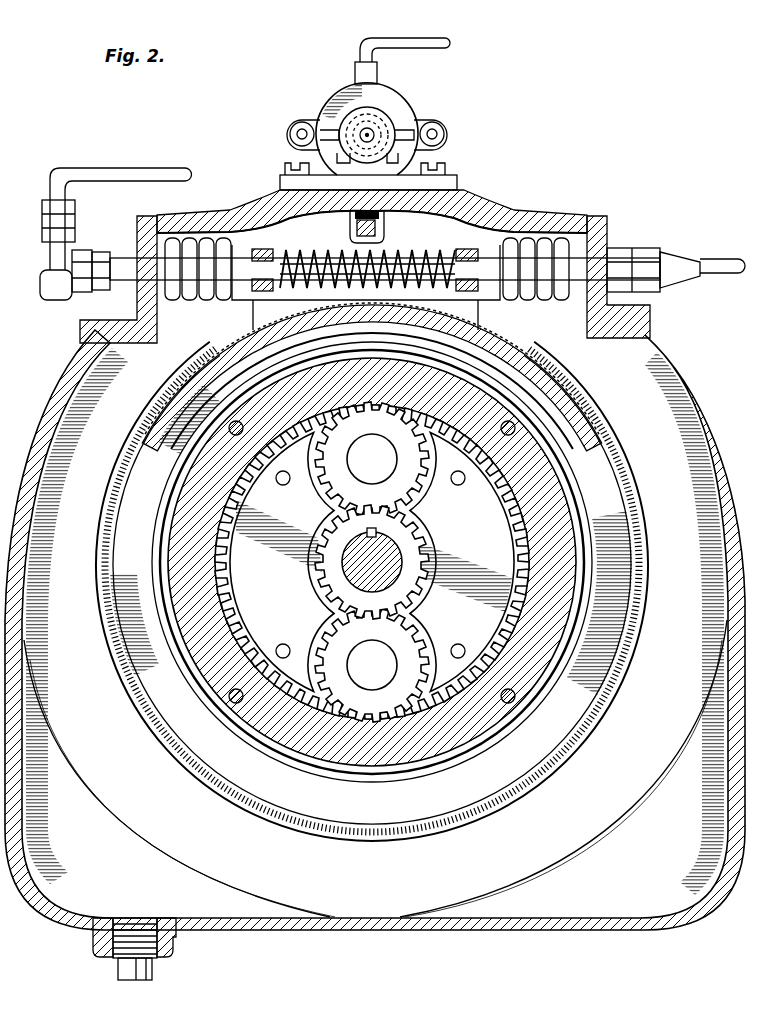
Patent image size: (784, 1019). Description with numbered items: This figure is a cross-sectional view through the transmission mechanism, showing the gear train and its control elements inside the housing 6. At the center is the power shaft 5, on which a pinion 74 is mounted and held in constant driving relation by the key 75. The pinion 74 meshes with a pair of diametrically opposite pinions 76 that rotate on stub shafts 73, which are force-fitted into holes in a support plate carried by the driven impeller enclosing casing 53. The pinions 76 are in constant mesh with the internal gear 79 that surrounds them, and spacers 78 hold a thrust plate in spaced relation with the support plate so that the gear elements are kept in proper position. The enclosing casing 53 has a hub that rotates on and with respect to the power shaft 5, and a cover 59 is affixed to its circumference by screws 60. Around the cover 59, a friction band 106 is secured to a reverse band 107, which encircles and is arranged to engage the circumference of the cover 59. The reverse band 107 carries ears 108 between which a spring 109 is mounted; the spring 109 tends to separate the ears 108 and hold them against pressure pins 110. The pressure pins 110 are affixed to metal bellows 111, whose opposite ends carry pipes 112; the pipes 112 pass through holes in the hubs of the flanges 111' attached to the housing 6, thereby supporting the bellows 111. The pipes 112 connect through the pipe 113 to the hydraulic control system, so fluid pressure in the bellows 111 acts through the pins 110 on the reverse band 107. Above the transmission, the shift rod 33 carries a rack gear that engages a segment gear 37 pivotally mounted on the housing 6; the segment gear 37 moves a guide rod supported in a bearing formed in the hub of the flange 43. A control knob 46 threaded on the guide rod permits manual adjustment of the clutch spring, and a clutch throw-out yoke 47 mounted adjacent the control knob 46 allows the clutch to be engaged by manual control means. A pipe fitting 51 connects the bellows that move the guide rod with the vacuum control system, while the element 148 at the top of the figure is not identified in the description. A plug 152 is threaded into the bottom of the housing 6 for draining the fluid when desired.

The power shaft 5 is at (350, 580).
The housing 6 is at (702, 380).
The shift rod 33 is at (378, 243).
The segment gear 37 is at (386, 226).
The flange 43 is at (398, 102).
The control knob 46 is at (339, 128).
The clutch throw-out yoke 47 is at (345, 95).
The pipe fitting 51 is at (355, 70).
The driven impeller enclosing casing 53 is at (205, 345).
The cover 59 is at (330, 305).
The screws 60 is at (372, 304).
The stub shafts 73 is at (372, 562).
The pinion 74 is at (416, 530).
The key 75 is at (334, 520).
The pinions 76 is at (426, 480).
The spacers 78 is at (374, 556).
The internal gear 79 is at (208, 542).
The friction band 106 is at (160, 380).
The reverse band 107 is at (140, 408).
The ears 108 is at (272, 254).
The spring 109 is at (316, 252).
The pressure pins 110 is at (240, 258).
The metal bellows 111 is at (369, 241).
The flanges 111' is at (381, 279).
The pipes 112 is at (125, 262).
The pipe 113 is at (136, 168).
The tube 148 is at (415, 38).
The plug 152 is at (133, 972).